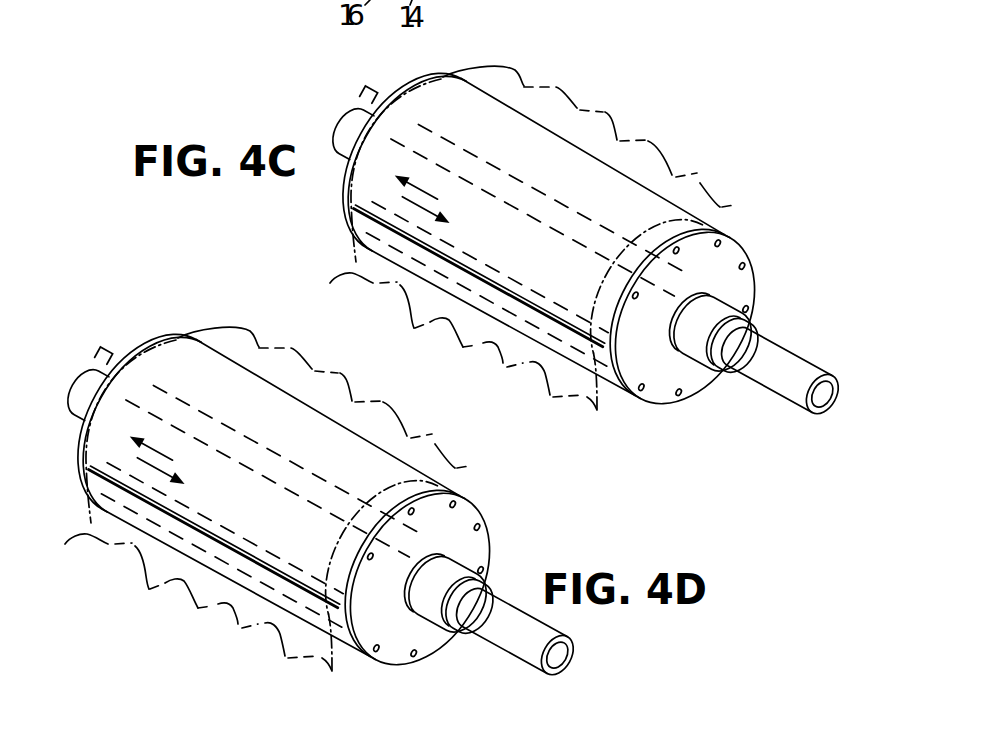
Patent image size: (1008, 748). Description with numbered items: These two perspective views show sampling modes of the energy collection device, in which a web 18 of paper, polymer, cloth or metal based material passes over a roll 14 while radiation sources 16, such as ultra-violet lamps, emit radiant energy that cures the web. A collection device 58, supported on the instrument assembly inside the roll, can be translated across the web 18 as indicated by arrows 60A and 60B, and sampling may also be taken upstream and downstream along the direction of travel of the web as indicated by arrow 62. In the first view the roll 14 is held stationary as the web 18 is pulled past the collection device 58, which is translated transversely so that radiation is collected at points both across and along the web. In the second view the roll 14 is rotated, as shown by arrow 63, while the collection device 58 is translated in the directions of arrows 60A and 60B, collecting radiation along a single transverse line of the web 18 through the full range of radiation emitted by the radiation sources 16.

In FIG. 4C, the roll 14 is at (671, 406).
In FIG. 4D, the roll 14 is at (406, 667).
In FIG. 4C, the radiation sources 16 is at (736, 242).
In FIG. 4D, the radiation sources 16 is at (471, 503).
In FIG. 4C, the web 18 is at (690, 197).
In FIG. 4D, the web 18 is at (430, 454).
In FIG. 4C, the collection device 58 is at (356, 234).
In FIG. 4D, the collection device 58 is at (91, 495).
In FIG. 4C, the arrow 60A is at (428, 170).
In FIG. 4D, the arrow 60A is at (163, 430).
In FIG. 4C, the arrow 60B is at (424, 190).
In FIG. 4D, the arrow 60B is at (163, 450).
In FIG. 4C, the arrow 62 is at (555, 159).
In FIG. 4D, the arrow 62 is at (288, 420).
In FIG. 4D, the arrow 63 is at (393, 583).